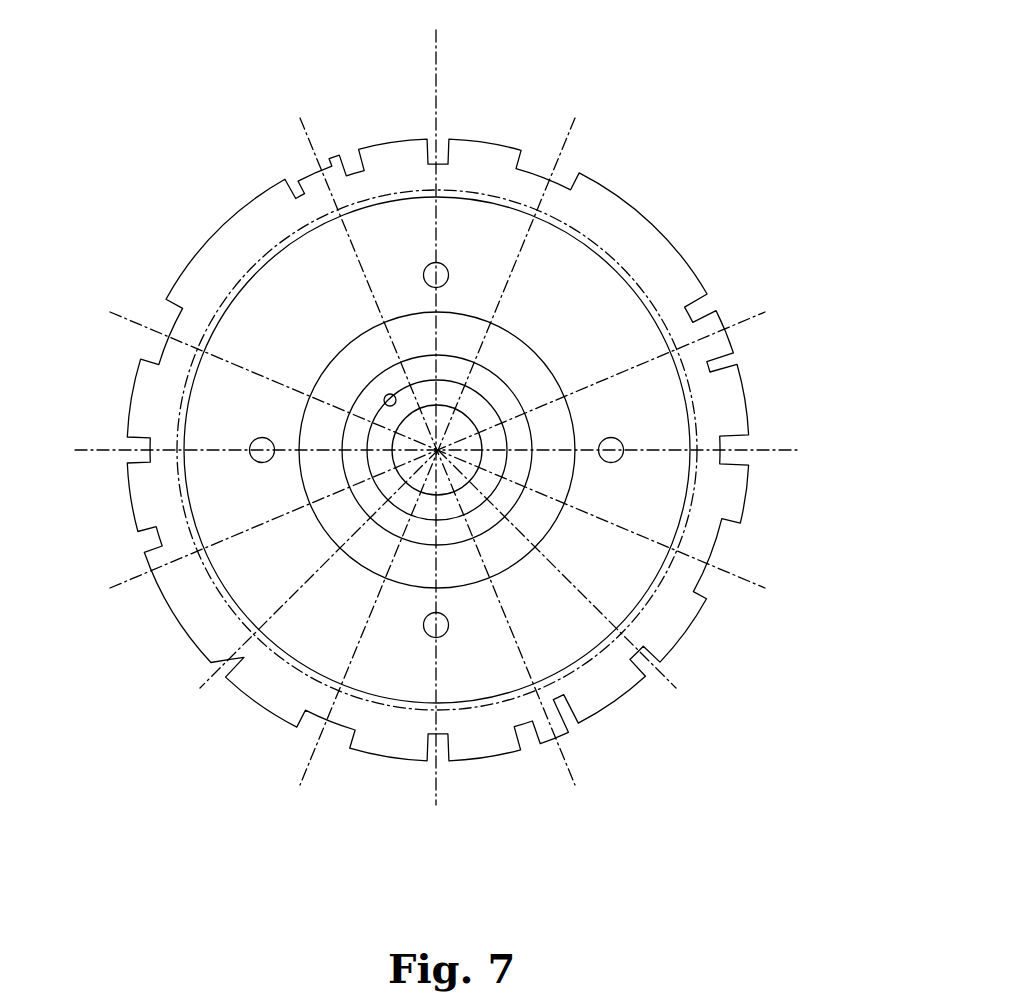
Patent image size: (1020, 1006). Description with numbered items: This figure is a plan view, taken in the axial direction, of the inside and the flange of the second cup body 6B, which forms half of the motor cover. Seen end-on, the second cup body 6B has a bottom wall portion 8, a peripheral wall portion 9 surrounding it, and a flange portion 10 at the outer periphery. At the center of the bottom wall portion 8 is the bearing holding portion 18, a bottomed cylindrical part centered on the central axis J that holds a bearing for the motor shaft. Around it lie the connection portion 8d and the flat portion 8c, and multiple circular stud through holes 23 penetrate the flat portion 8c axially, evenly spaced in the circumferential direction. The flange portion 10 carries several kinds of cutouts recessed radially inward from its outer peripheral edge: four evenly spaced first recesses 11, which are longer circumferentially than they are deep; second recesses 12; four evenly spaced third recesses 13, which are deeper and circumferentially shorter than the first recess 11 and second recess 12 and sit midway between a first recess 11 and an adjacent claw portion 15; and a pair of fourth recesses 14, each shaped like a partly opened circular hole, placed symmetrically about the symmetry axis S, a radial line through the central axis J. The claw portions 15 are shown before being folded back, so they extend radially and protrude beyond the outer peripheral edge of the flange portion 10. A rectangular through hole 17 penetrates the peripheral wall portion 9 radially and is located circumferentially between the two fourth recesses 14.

The second cup body 6B is at (700, 160).
The symmetry axis S is at (437, 44).
The central axis J is at (521, 351).
The bottom wall portion 8 is at (700, 524).
The flat portion 8c is at (251, 331).
The connection portion 8d is at (312, 425).
The peripheral wall portion 9 is at (735, 384).
The flange portion 10 is at (650, 242).
The first recess 11 is at (565, 177).
The second recess 12 is at (292, 182).
The third recess 13 is at (443, 157).
The fourth recess 14 is at (222, 662).
The claw portion 15 is at (323, 147).
The through hole 17 is at (492, 712).
The bearing holding portion 18 is at (386, 397).
The stud through hole 23 is at (632, 490).